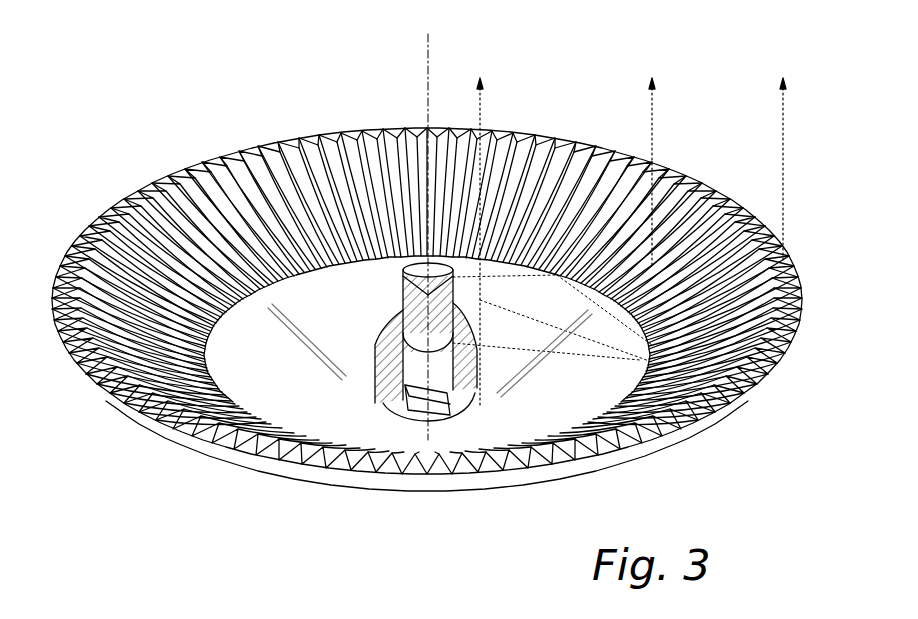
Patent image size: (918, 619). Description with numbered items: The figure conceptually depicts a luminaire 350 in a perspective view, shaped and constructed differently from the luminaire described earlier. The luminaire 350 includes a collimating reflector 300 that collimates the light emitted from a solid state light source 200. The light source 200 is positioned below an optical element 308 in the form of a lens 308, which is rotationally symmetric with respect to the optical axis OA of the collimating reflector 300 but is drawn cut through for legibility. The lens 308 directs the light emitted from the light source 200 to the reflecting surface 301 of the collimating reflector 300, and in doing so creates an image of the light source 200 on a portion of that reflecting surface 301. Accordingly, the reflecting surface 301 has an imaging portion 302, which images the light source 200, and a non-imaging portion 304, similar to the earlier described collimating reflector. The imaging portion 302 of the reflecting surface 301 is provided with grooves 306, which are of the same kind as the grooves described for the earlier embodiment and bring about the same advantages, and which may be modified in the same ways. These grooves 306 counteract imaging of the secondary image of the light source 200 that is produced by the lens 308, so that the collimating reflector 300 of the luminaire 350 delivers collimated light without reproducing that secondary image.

The collimating reflector 300 is at (295, 88).
The reflecting surface 301 is at (222, 185).
The imaging portion 302 is at (124, 248).
The non-imaging portion 304 is at (524, 431).
The grooves 306 is at (588, 180).
The optical element 308 is at (381, 326).
The light source 200 is at (394, 406).
The luminaire 350 is at (687, 53).
The optical axis OA is at (426, 224).